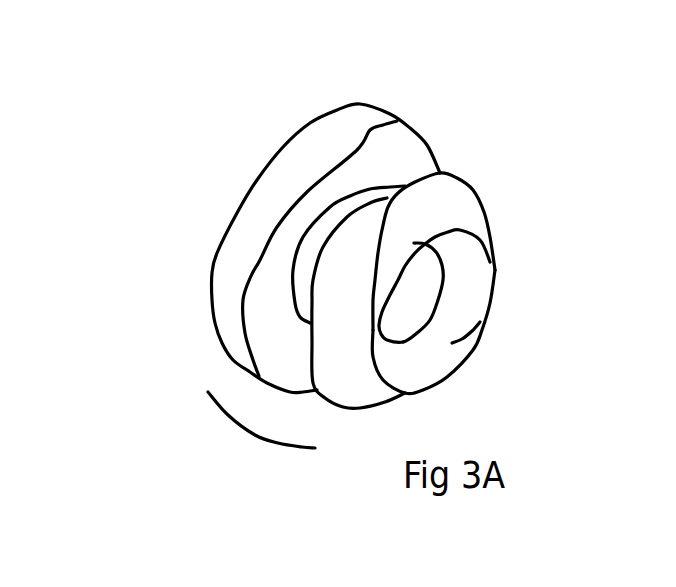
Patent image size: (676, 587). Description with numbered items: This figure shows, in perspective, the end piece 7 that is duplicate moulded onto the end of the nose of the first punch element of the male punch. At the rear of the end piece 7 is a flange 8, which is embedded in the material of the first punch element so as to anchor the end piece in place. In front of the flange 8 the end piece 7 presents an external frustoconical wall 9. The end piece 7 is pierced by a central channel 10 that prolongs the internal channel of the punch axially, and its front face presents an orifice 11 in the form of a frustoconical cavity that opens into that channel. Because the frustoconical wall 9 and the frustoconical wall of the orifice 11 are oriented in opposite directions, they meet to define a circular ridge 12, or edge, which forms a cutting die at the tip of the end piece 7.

The end piece 7 is at (255, 436).
The flange 8 is at (260, 203).
The frustoconical wall 9 is at (467, 212).
The central channel 10 is at (400, 297).
The orifice 11 is at (488, 320).
The circular ridge 12 is at (447, 378).